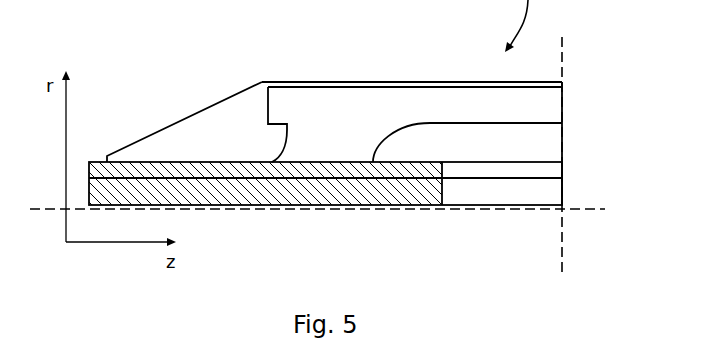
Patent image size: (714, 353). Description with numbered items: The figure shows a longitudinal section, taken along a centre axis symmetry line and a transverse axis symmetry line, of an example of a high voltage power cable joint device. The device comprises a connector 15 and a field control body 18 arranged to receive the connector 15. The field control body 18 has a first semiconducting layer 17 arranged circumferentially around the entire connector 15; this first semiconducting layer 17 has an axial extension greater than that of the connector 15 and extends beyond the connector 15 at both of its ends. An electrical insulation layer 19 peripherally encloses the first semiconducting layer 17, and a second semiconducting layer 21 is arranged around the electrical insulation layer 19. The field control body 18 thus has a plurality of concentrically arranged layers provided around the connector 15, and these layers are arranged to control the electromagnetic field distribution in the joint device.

The connector 15 is at (547, 170).
The first semiconducting layer 17 is at (547, 144).
The field control body 18 is at (175, 102).
The electrical insulation layer 19 is at (400, 105).
The second semiconducting layer 21 is at (228, 130).